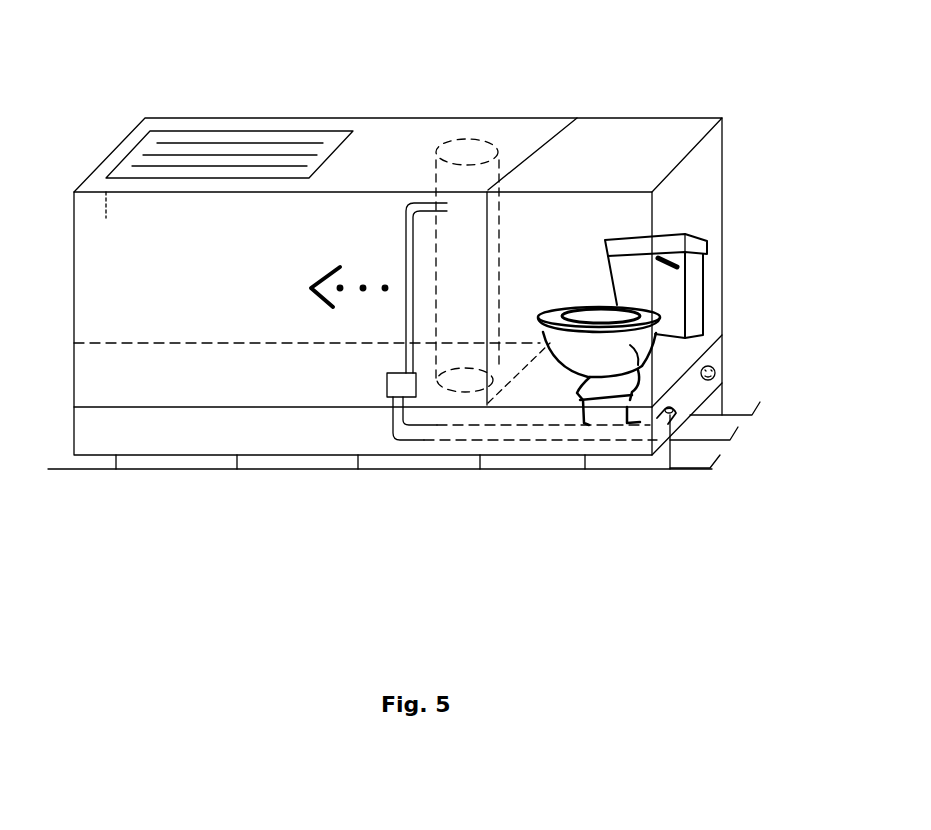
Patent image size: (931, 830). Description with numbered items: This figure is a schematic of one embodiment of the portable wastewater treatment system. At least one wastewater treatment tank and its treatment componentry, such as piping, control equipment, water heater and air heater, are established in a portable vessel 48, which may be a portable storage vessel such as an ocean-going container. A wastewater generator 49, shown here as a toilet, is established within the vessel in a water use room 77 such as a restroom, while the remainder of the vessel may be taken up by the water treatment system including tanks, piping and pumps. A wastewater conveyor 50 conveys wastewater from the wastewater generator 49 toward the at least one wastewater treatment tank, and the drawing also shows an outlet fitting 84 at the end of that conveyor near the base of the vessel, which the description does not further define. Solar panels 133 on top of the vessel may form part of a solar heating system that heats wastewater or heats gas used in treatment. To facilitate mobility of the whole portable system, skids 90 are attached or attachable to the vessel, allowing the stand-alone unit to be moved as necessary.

The water use room 77 is at (732, 133).
The solar panels 133 is at (240, 129).
The portable vessel 48 is at (443, 98).
The wastewater generator 49 is at (712, 273).
The wastewater conveyor 50 is at (567, 430).
The drain outlet nozzle 84 is at (672, 413).
The skids 90 is at (767, 420).